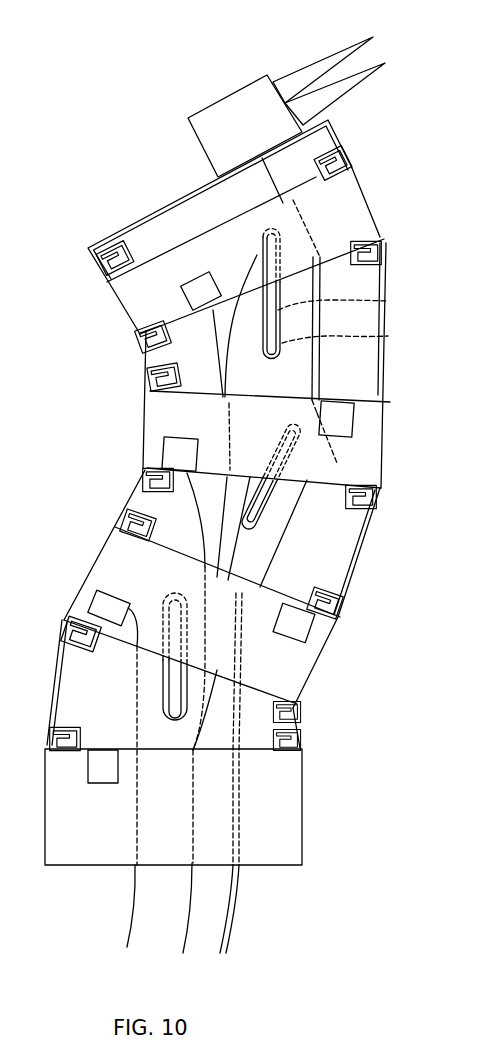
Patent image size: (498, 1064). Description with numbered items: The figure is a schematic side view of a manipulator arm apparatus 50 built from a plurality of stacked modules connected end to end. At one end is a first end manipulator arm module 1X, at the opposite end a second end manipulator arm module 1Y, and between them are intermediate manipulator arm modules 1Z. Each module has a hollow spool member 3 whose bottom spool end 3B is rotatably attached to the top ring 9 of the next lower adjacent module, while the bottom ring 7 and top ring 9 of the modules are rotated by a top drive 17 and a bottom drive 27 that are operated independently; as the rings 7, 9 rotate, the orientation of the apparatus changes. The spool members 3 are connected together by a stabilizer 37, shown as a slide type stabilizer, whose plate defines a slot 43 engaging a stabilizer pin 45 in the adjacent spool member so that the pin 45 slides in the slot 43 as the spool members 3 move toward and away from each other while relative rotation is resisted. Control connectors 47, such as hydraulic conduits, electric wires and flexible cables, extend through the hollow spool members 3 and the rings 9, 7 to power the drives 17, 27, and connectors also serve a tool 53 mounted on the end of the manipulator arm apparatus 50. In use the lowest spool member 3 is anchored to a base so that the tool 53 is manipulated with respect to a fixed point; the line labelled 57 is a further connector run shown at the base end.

The first end manipulator arm module 1X is at (323, 743).
The second end manipulator arm module 1Y is at (378, 152).
The intermediate manipulator arm module 1Z is at (421, 368).
The spool member 3 is at (308, 685).
The bottom spool end 3B is at (378, 235).
The bottom ring 7 is at (340, 615).
The top ring 9 is at (377, 247).
The top drive 17 is at (357, 424).
The bottom drive 27 is at (173, 437).
The stabilizer 37 is at (390, 337).
The slot 43 is at (387, 302).
The stabilizer pin 45 is at (262, 253).
The control connectors 47 is at (130, 908).
The manipulator arm apparatus 50 is at (92, 432).
The tool 53 is at (237, 86).
The drive wire 57 is at (227, 922).